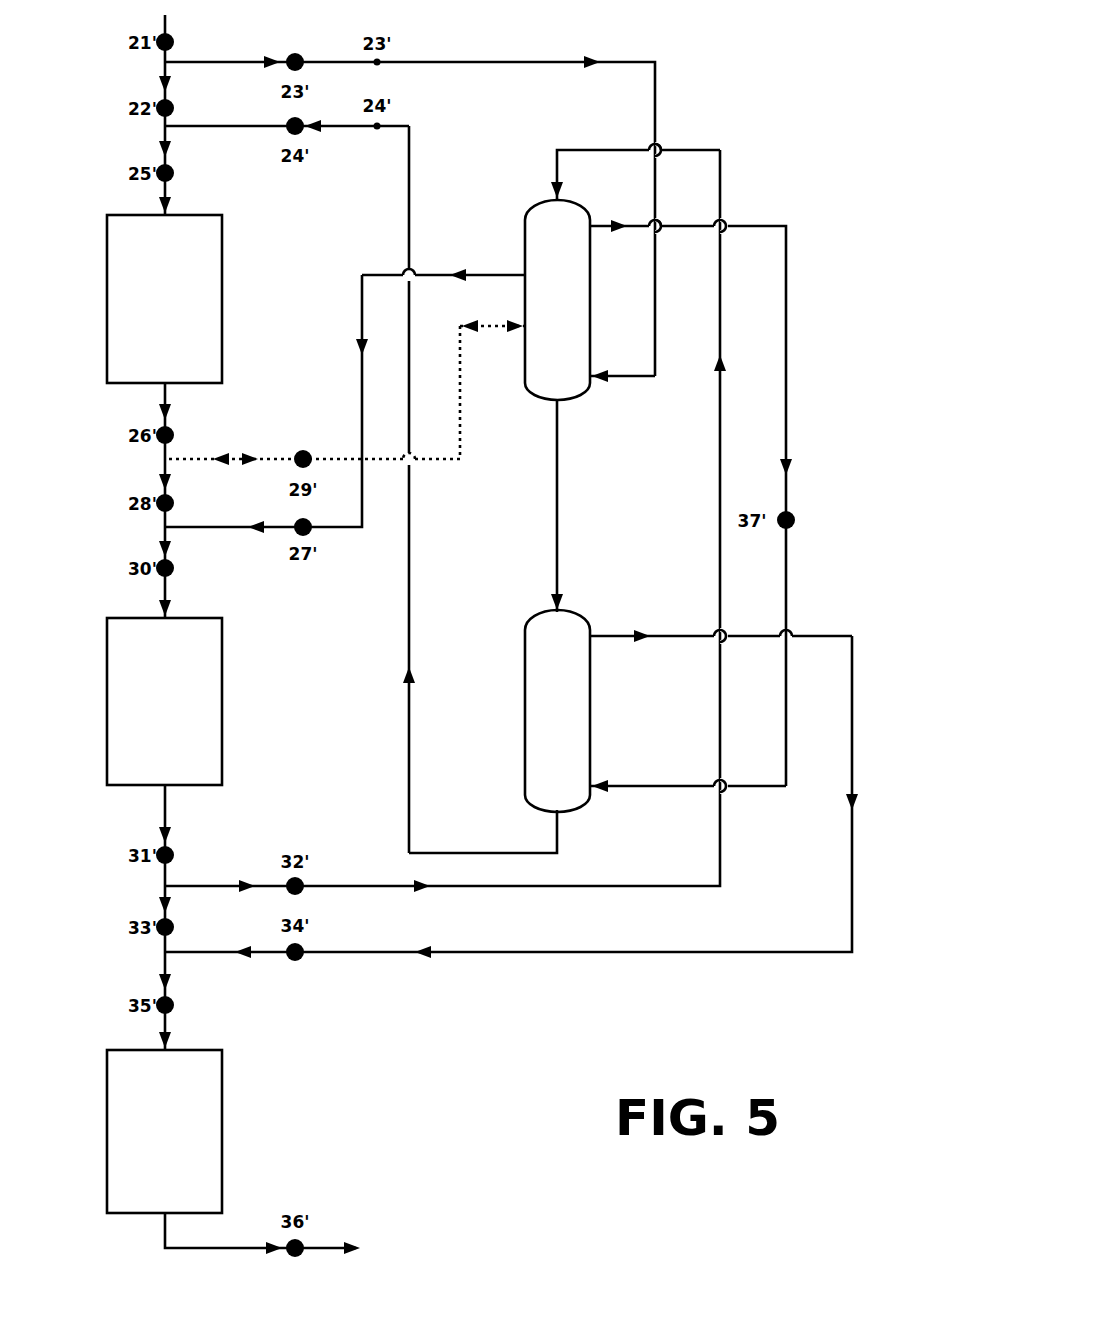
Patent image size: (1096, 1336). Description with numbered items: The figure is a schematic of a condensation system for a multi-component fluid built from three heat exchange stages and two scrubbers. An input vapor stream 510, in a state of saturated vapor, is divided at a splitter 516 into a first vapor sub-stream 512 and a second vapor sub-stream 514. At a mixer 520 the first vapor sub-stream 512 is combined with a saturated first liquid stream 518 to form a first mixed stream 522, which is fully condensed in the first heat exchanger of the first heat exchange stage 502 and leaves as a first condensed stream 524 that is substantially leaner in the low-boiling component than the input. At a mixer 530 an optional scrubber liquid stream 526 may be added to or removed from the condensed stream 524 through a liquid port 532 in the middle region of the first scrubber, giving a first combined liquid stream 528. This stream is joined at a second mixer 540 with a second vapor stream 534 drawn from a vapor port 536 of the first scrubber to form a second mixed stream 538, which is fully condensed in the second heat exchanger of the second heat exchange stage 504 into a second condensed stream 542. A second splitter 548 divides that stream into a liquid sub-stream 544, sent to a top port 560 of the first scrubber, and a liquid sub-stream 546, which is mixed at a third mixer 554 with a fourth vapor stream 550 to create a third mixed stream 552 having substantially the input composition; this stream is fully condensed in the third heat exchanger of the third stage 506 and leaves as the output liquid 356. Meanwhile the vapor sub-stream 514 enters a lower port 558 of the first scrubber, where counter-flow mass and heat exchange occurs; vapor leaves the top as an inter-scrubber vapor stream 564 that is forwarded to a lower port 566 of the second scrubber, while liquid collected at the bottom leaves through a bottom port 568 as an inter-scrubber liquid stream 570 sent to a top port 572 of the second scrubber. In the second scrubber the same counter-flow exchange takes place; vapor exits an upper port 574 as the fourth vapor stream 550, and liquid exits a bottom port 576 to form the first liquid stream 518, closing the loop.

The heat exchange stage 502 is at (235, 300).
The heat exchange stage 504 is at (248, 703).
The third heat exchanger HE3 506 is at (248, 1133).
The input vapor stream 510 is at (170, 22).
The first vapor sub-stream 512 is at (170, 68).
The vapor sub-stream 514 is at (410, 64).
The splitter 516 is at (165, 62).
The first liquid stream 518 is at (409, 188).
The mixer 520 is at (165, 126).
The first mixed stream 522 is at (170, 132).
The first condensed stream 524 is at (170, 392).
The scrubber liquid stream 526 is at (312, 445).
The first combined liquid stream 528 is at (170, 466).
The mixer 530 is at (165, 459).
The liquid port 532 is at (520, 333).
The second vapor stream 534 is at (325, 532).
The vapor port 536 is at (522, 275).
The second mixed stream 538 is at (170, 535).
The second mixer 540 is at (165, 527).
The second condensed stream 542 is at (170, 798).
The liquid sub-stream 544 is at (312, 878).
The liquid sub-stream 546 is at (170, 890).
The second splitter 548 is at (165, 886).
The fourth vapor stream 550 is at (688, 148).
The third mixed stream 552 is at (170, 958).
The third mixer 554 is at (165, 952).
The lower port 558 is at (598, 392).
The top port 560 is at (592, 225).
The inter-scrubber vapor stream 564 is at (770, 226).
The lower port 566 is at (595, 786).
The bottom port 568 is at (562, 404).
The inter-scrubber liquid stream 570 is at (557, 488).
The top port 572 is at (568, 612).
The upper port 574 is at (592, 632).
The bottom port 576 is at (560, 815).
The outlet line 356 is at (322, 1243).